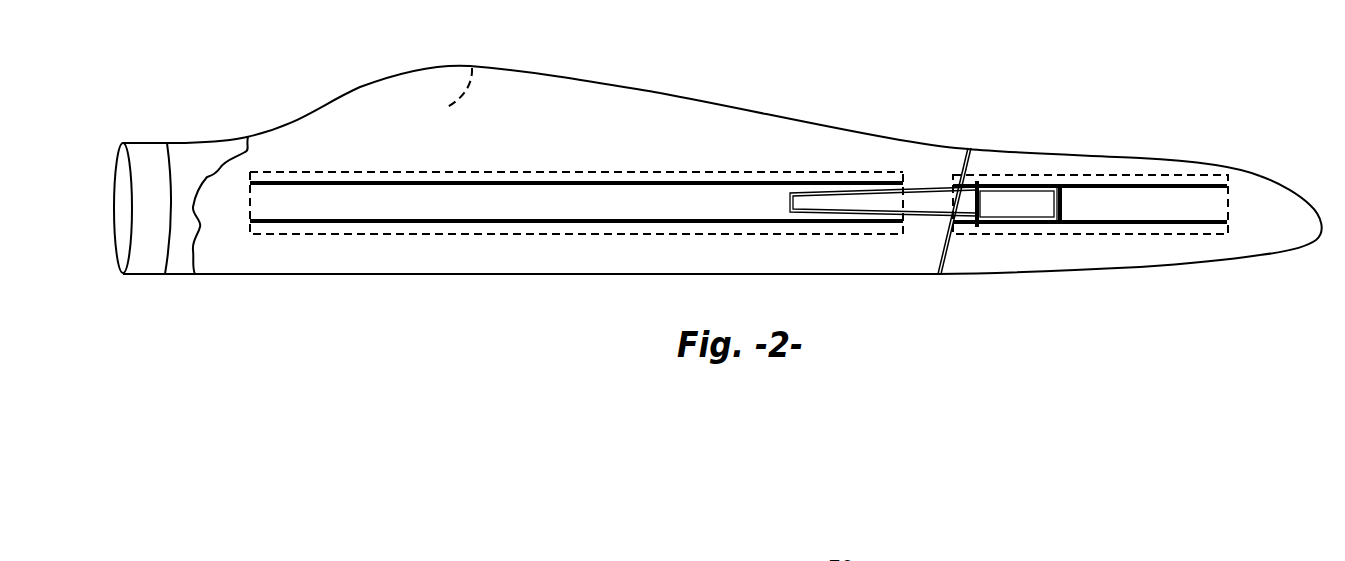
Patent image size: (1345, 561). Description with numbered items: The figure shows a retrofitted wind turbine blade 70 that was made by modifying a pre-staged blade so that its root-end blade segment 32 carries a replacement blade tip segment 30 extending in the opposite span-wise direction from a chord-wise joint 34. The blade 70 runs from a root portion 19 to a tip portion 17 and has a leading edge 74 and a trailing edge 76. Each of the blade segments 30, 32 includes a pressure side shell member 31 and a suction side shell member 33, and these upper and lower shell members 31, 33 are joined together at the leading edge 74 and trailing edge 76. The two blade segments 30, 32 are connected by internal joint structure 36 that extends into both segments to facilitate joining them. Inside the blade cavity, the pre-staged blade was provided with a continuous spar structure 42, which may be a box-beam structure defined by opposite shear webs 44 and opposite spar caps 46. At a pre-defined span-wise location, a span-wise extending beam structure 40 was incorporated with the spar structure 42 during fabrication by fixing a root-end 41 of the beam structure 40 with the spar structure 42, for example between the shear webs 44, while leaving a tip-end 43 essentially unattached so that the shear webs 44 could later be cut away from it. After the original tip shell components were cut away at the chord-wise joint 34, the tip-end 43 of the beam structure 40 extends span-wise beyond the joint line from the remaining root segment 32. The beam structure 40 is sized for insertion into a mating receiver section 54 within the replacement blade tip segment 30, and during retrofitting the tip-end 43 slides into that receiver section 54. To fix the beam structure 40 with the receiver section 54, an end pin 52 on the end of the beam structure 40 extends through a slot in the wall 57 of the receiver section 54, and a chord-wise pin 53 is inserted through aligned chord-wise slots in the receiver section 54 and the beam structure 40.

The tip portion 17 is at (1282, 225).
The root portion 19 is at (188, 210).
The replacement blade tip segment 30 is at (1148, 167).
The pressure side shell member 31 is at (540, 138).
The root-end blade segment 32 is at (615, 105).
The suction side shell member 33 is at (472, 67).
The chord-wise joint 34 is at (937, 273).
The internal joint structure 36 is at (945, 145).
The beam structure 40 is at (908, 187).
The root-end of the beam structure 41 is at (857, 207).
The spar structure 42 is at (643, 152).
The tip-end of the beam structure 43 is at (1027, 207).
The shear webs 44 is at (418, 222).
The spar caps 46 is at (347, 172).
The end pin 52 is at (1065, 203).
The chord-wise pin 53 is at (982, 203).
The receiver section 54 is at (995, 222).
The wall of the receiver section 57 is at (1063, 217).
The retrofitted wind turbine blade 70 is at (825, 65).
The leading edge 74 is at (470, 275).
The trailing edge 76 is at (758, 113).